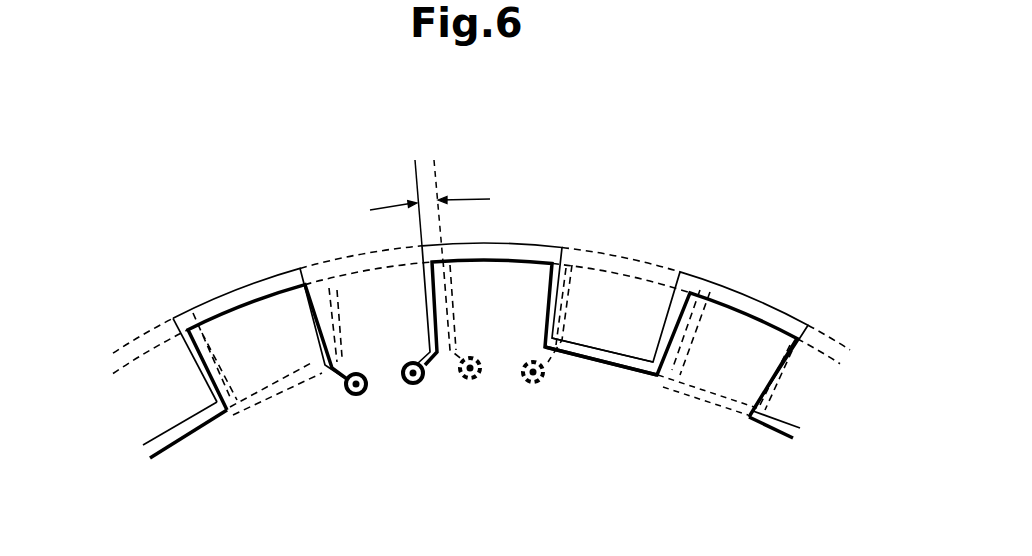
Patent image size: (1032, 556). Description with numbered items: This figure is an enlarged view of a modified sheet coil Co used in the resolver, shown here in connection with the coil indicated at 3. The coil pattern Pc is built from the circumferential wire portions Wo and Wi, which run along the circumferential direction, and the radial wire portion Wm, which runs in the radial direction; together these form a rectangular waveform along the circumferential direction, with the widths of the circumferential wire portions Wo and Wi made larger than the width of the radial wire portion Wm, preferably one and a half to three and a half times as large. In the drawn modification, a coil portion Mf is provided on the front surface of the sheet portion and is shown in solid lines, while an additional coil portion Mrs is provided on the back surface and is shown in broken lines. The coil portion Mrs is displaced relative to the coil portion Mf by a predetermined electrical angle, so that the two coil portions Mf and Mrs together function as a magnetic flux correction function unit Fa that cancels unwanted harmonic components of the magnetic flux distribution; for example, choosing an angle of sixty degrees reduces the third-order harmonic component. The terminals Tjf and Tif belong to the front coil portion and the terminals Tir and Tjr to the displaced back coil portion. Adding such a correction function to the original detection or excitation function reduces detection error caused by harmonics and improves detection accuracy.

The stator coil 3 is at (210, 259).
The circumferential wire portion Wo is at (134, 341).
The radial wire portion Wm is at (193, 362).
The circumferential wire portion Wi is at (190, 435).
The additional coil portion Mrs is at (339, 257).
The magnetic flux correction function unit Fa is at (597, 213).
The sheet coil Co is at (716, 223).
The coil portion Mf is at (741, 286).
The coil pattern Pc is at (616, 377).
The terminal j front Tjf is at (357, 395).
The terminal i front Tif is at (413, 386).
The terminal i rear Tir is at (478, 385).
The terminal j rear Tjr is at (537, 383).